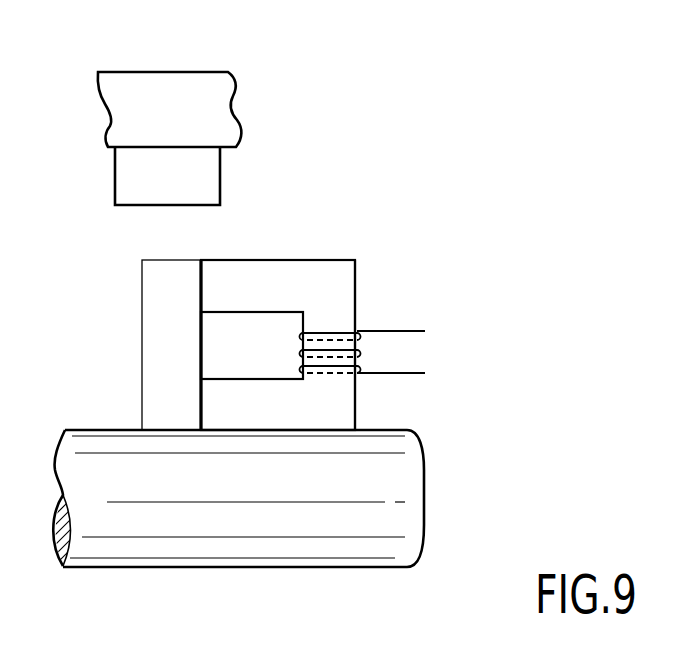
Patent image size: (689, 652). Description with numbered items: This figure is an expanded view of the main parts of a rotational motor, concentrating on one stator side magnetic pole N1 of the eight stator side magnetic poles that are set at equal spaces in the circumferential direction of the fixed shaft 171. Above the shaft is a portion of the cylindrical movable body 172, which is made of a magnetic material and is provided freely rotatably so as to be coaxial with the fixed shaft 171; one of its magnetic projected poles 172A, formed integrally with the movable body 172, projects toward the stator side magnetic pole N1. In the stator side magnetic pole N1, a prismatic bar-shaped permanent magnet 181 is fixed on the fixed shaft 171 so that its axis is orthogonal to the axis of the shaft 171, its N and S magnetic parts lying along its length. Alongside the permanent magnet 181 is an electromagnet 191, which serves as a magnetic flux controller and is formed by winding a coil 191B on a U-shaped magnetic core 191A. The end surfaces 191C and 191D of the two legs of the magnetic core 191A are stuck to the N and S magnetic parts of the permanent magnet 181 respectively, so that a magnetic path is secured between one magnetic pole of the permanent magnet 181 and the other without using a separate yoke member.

The fixed shaft 171 is at (387, 553).
The movable body 172 is at (181, 88).
The magnetic projected pole 172A is at (203, 177).
The permanent magnet 181 is at (155, 342).
The electromagnet 191 is at (346, 250).
The magnetic core 191A is at (335, 411).
The coil 191B is at (335, 343).
The end surface 191C is at (203, 278).
The end surface 191D is at (203, 412).
The stator side magnetic pole N1 is at (384, 276).